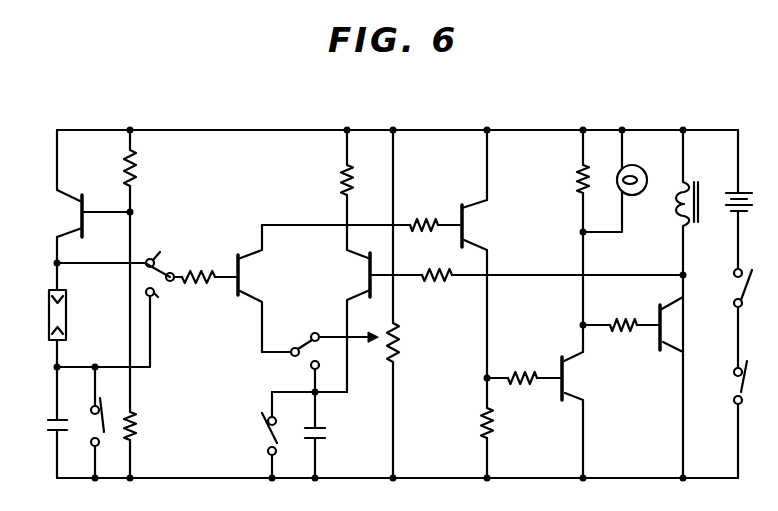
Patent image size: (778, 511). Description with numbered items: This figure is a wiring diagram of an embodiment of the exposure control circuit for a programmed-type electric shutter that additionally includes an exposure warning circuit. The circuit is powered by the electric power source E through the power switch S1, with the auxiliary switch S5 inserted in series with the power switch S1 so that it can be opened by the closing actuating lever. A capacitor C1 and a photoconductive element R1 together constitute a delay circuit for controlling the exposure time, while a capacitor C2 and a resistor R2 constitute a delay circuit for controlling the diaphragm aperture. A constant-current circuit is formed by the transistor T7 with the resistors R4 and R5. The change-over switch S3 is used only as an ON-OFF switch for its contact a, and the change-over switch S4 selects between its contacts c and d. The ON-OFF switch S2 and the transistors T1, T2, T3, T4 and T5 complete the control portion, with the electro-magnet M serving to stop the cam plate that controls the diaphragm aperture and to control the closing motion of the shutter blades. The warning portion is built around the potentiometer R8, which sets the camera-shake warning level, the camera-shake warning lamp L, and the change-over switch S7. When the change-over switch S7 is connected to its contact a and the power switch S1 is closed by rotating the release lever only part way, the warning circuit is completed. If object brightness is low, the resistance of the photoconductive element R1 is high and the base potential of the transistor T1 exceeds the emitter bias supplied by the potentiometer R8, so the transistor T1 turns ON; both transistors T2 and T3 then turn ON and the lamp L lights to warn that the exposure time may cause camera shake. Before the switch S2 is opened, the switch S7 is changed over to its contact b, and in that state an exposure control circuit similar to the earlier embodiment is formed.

The transistor T7 is at (78, 197).
The resistor R4 is at (138, 176).
The photoconductive element R1 is at (67, 327).
The capacitor C1 is at (48, 418).
The change-over switch S3 is at (104, 432).
The resistor R5 is at (140, 422).
The change-over switch S4 is at (173, 280).
The transistor T1 is at (240, 262).
The resistor R2 is at (340, 180).
The transistor T5 is at (350, 258).
The change-over switch S7 is at (307, 345).
The ON-OFF switch S2 is at (263, 432).
The capacitor C2 is at (326, 432).
The potentiometer R8 is at (375, 341).
The transistor T2 is at (463, 211).
The transistor T3 is at (563, 363).
The transistor T4 is at (663, 344).
The camera-shake warning lamp L is at (642, 191).
The electro-magnet M is at (702, 186).
The electric power source E is at (731, 212).
The power switch S1 is at (746, 288).
The auxiliary switch S5 is at (742, 380).
The contact a is at (81, 408).
The contact b is at (334, 370).
The contact c is at (164, 256).
The contact d is at (163, 301).